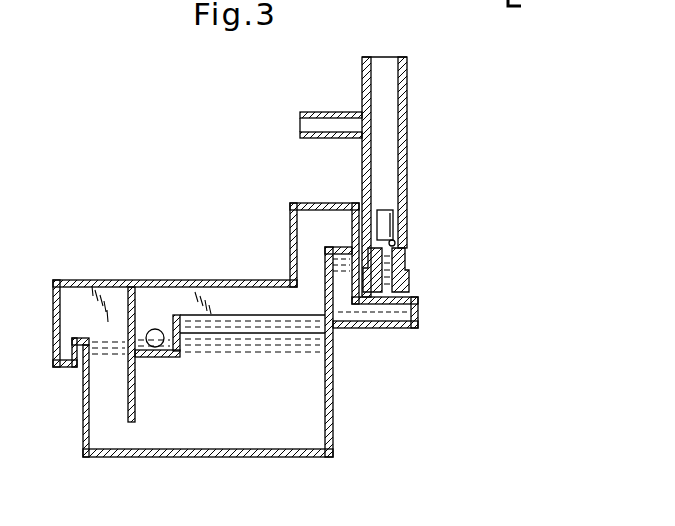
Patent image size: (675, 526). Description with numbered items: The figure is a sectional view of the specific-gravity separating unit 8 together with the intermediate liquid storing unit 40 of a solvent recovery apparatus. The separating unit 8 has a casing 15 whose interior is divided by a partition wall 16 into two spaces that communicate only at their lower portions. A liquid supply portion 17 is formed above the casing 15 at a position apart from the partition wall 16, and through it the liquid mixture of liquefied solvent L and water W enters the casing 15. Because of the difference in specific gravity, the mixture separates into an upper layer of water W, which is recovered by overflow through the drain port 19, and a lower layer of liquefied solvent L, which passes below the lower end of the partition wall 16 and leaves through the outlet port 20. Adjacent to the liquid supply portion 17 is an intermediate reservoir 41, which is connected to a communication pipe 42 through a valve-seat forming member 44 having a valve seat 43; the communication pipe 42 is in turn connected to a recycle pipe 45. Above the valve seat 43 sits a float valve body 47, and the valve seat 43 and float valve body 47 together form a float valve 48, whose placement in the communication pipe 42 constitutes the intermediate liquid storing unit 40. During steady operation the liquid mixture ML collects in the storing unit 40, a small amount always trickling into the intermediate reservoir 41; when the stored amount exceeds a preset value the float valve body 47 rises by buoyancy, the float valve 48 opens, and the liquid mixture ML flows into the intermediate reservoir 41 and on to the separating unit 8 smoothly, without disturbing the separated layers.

The specific-gravity separating unit 8 is at (183, 390).
The casing 15 is at (333, 424).
The partition wall 16 is at (128, 320).
The liquid supply portion 17 is at (311, 243).
The drain port 19 is at (155, 329).
The outlet port 20 is at (60, 369).
The intermediate liquid storing unit 40 is at (384, 189).
The intermediate reservoir 41 is at (407, 338).
The communication pipe 42 is at (408, 102).
The valve seat 43 is at (421, 255).
The valve-seat forming member 44 is at (402, 298).
The recycle pipe 45 is at (320, 111).
The float valve body 47 is at (390, 218).
The float valve 48 is at (450, 232).
The water W is at (222, 318).
The liquid mixture ML is at (405, 327).
The liquefied solvent L is at (267, 420).